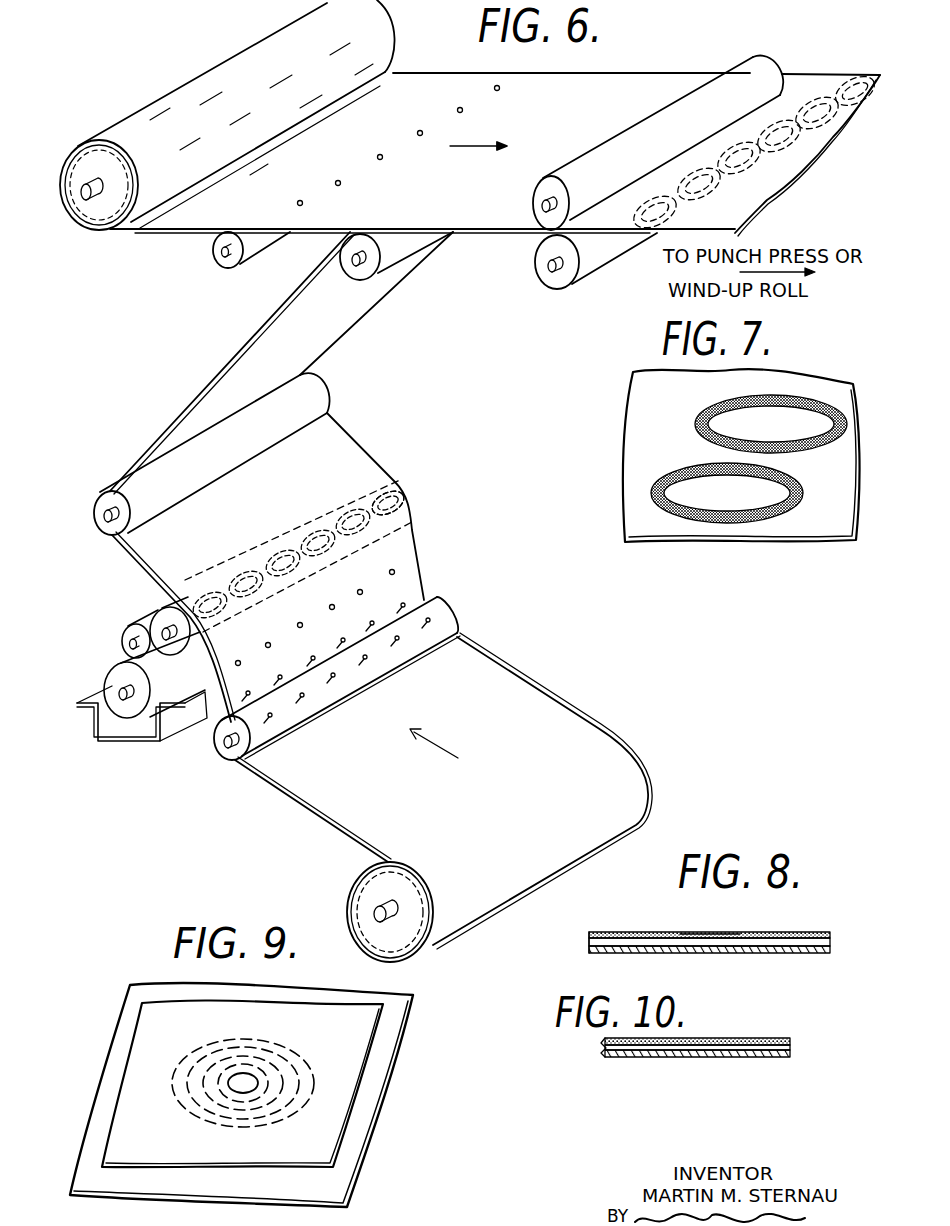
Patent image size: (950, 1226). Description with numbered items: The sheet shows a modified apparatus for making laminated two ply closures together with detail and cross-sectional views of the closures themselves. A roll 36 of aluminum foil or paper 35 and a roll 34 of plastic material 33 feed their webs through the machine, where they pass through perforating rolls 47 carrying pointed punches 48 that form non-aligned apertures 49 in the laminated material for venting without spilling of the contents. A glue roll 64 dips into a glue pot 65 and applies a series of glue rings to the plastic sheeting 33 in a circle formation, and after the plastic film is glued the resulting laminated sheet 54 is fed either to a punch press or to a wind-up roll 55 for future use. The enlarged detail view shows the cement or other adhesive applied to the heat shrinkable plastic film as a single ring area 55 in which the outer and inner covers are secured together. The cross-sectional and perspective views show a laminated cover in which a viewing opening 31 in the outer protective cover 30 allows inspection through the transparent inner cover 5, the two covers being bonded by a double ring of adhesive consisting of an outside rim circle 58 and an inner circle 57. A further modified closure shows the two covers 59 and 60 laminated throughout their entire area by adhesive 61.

In FIG. 8, the transparent inner cover 5 is at (792, 952).
In FIG. 9, the transparent inner cover 5 is at (382, 1066).
In FIG. 8, the outer protective cover 30 is at (792, 932).
In FIG. 9, the outer protective cover 30 is at (345, 1102).
In FIG. 8, the viewing opening 31 is at (690, 930).
In FIG. 9, the viewing opening 31 is at (243, 1073).
In FIG. 6, the plastic material 33 is at (447, 800).
In FIG. 7, the plastic material 33 is at (673, 432).
In FIG. 6, the roll of plastic material 34 is at (358, 896).
In FIG. 6, the aluminum foil or paper 35 is at (297, 181).
In FIG. 6, the roll of aluminum foil or paper 36 is at (108, 216).
In FIG. 6, the perforating rolls 47 is at (226, 246).
In FIG. 6, the pointed punches 48 is at (430, 620).
In FIG. 6, the apertures 49 is at (394, 570).
In FIG. 6, the laminated sheet 54 is at (790, 184).
In FIG. 6, the wind-up roll 55 is at (400, 488).
In FIG. 7, the wind-up roll 55 is at (818, 445).
In FIG. 8, the inner circle 57 is at (655, 948).
In FIG. 9, the inner circle 57 is at (305, 1080).
In FIG. 8, the outside rim circle 58 is at (598, 952).
In FIG. 9, the outside rim circle 58 is at (178, 1078).
In FIG. 10, the cover 59 is at (738, 1057).
In FIG. 10, the cover 60 is at (738, 1038).
In FIG. 10, the adhesive 61 is at (790, 1047).
In FIG. 6, the glue roll 64 is at (160, 618).
In FIG. 6, the glue pot 65 is at (137, 728).